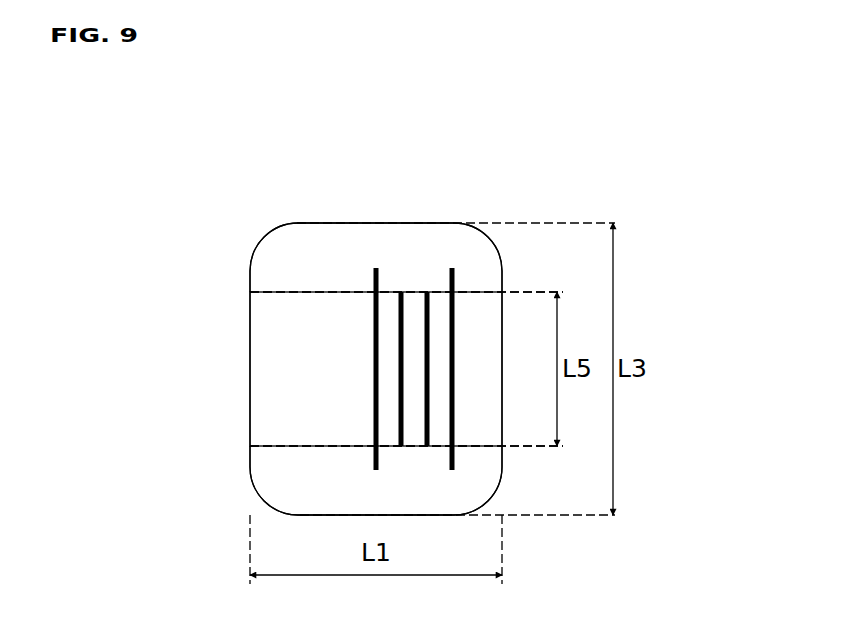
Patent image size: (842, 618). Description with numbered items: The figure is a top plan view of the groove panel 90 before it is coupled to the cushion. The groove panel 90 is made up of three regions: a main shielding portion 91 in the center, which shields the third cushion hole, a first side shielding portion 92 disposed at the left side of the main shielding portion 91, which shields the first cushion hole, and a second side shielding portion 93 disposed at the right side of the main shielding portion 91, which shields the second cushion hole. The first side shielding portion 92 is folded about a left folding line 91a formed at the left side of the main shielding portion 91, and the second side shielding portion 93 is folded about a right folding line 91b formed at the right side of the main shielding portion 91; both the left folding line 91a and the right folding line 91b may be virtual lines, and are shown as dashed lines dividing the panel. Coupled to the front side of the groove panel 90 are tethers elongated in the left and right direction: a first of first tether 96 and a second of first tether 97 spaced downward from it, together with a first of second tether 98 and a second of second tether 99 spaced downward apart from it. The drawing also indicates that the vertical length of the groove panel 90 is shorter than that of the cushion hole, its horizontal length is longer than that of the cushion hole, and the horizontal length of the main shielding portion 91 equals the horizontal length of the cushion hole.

The groove panel 90 is at (166, 183).
The main shielding portion 91 is at (278, 365).
The left folding line 91a is at (282, 447).
The right folding line 91b is at (280, 296).
The first side shielding portion 92 is at (292, 482).
The second side shielding portion 93 is at (272, 260).
The first of first tether 96 is at (376, 268).
The second of first tether 97 is at (452, 268).
The first of second tether 98 is at (401, 292).
The second of second tether 99 is at (427, 292).